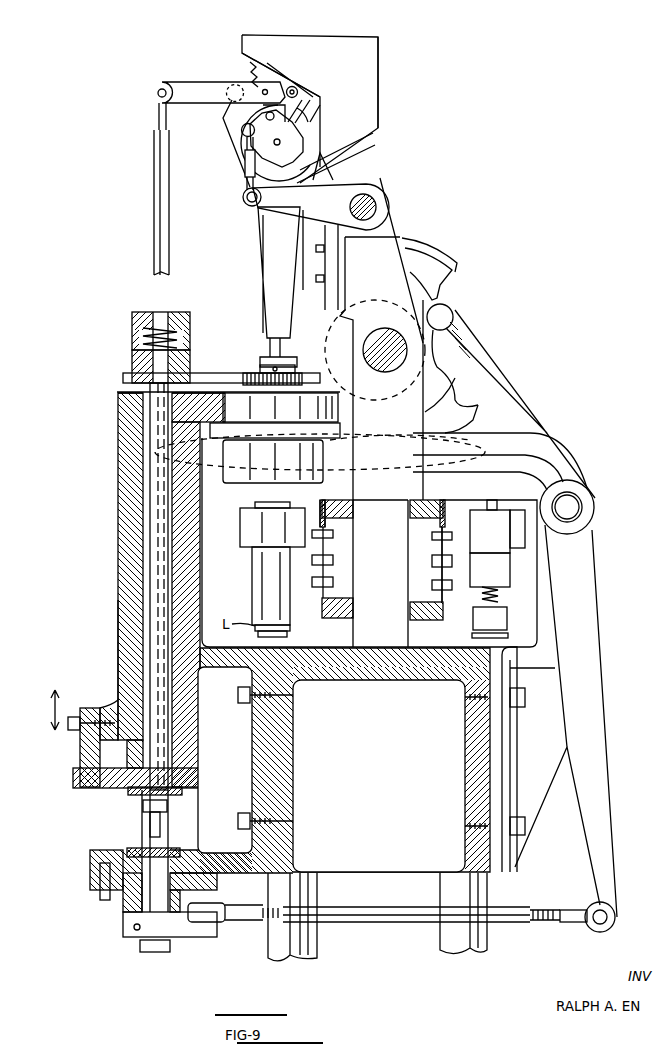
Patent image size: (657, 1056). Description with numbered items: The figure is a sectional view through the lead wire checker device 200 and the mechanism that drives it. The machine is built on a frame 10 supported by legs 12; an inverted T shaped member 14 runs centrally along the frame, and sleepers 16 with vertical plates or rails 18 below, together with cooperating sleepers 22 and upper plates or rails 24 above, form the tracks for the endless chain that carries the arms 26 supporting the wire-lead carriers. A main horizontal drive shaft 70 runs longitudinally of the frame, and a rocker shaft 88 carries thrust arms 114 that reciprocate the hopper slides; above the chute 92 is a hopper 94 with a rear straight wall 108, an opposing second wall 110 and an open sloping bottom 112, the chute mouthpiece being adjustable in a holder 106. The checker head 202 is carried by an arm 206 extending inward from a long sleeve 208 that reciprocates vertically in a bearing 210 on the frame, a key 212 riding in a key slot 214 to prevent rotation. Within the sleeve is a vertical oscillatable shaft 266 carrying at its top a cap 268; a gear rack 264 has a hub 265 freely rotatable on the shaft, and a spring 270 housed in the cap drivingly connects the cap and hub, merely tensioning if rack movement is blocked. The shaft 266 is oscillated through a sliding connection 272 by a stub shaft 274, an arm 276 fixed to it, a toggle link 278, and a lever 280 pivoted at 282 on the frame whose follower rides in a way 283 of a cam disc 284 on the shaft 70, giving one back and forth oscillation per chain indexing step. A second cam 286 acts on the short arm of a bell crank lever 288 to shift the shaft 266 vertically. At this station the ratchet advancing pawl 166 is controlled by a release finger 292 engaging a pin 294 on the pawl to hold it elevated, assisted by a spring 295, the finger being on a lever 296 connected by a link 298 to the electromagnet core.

The frame 10 is at (463, 765).
The legs 12 is at (305, 962).
The inverted T shaped member 14 is at (405, 548).
The sleepers 16 is at (347, 617).
The vertical plates or rails 18 is at (322, 597).
The sleepers 22 is at (447, 490).
The upper plates or rails 24 is at (322, 513).
The arms 26 is at (495, 580).
The main horizontal drive shaft 70 is at (383, 337).
The rocker shaft 88 is at (373, 205).
The feeding chutes 92 is at (263, 262).
The hoppers 94 is at (370, 97).
The holders 106 is at (333, 35).
The rear straight wall 108 is at (377, 50).
The second wall 110 is at (313, 132).
The open sloping bottom 112 is at (358, 143).
The thrust arms 114 is at (367, 177).
The ratchet advancing pawl 166 is at (306, 112).
The lead wire checker device 200 is at (452, 226).
The checker head 202 is at (243, 494).
The arm 206 is at (117, 405).
The long sleeve 208 is at (132, 595).
The bearing 210 is at (118, 652).
The key 212 is at (80, 748).
The key slot 214 is at (75, 782).
The gear rack 264 is at (213, 377).
The hub 265 is at (132, 360).
The vertical oscillatable shaft 266 is at (150, 505).
The cap 268 is at (132, 327).
The spring 270 is at (188, 327).
The sliding connection 272 is at (152, 827).
The stub shaft 274 is at (143, 892).
The arm 276 is at (133, 937).
The toggle link 278 is at (387, 923).
The lever 280 is at (602, 800).
The pivot 282 is at (575, 507).
The way 283 is at (462, 402).
The cam disc 284 is at (453, 263).
The second cam 286 is at (463, 332).
The bell crank lever 288 is at (500, 386).
The release finger 292 is at (298, 95).
The pin 294 is at (306, 104).
The spring 295 is at (237, 76).
The lever 296 is at (182, 88).
The link 298 is at (158, 162).